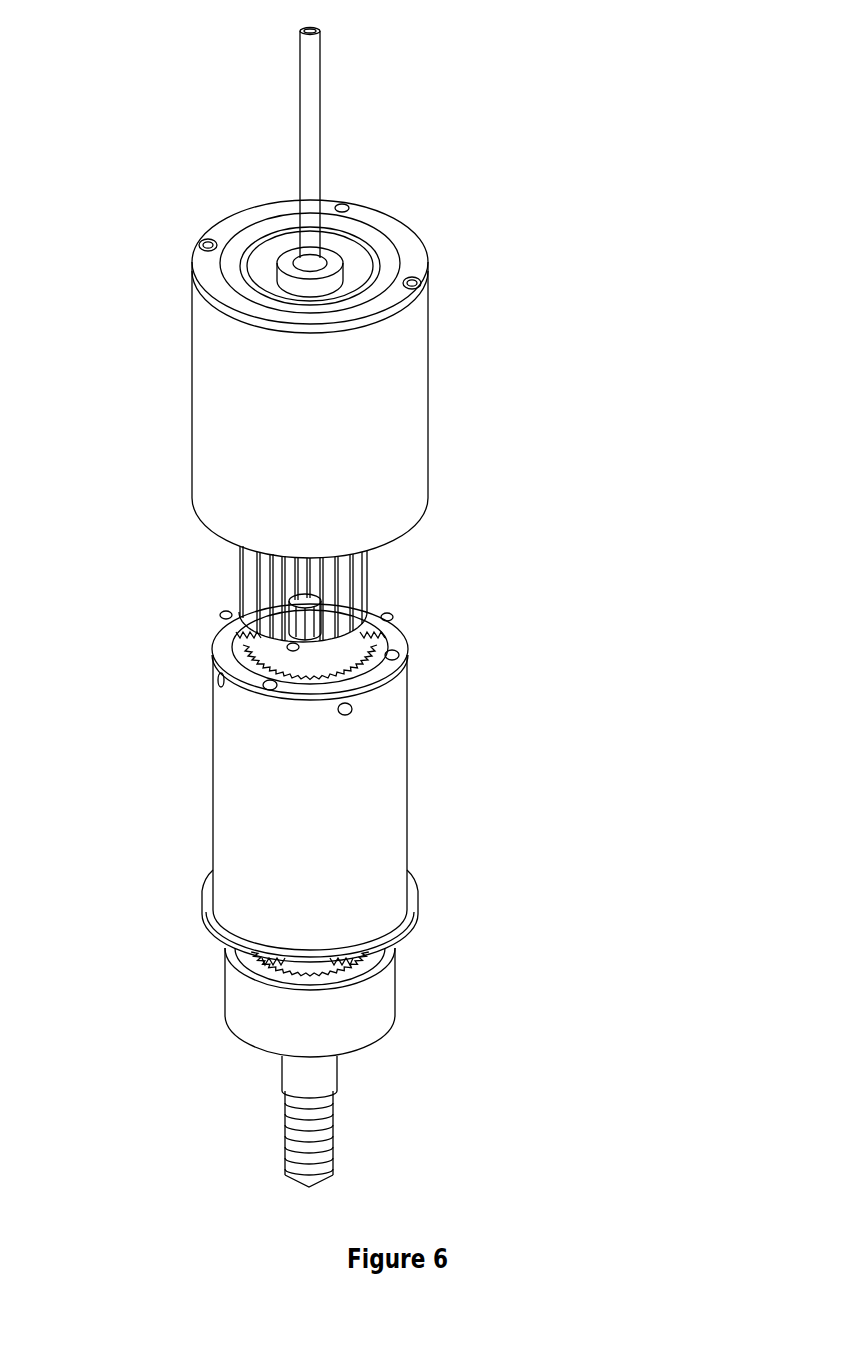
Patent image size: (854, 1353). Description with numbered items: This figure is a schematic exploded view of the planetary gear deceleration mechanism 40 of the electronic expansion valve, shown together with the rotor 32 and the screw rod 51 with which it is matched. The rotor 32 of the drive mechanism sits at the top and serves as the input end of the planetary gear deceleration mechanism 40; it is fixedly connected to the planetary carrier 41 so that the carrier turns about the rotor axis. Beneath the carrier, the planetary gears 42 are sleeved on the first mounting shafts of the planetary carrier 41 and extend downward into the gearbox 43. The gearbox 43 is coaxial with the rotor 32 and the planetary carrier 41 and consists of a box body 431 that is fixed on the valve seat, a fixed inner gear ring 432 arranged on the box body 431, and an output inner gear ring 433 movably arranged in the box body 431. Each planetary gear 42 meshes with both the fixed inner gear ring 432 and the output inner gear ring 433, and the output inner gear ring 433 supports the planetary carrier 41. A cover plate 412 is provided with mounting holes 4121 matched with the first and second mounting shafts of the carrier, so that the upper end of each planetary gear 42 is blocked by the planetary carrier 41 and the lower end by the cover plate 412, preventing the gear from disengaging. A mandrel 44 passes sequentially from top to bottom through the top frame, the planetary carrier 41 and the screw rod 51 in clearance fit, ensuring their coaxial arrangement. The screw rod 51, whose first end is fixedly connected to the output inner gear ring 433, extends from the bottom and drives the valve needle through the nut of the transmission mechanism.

The rotor 32 is at (240, 418).
The planetary gear deceleration mechanism 40 is at (647, 226).
The planetary carrier 41 is at (390, 262).
The planetary gear 42 is at (365, 588).
The gearbox 43 is at (588, 693).
The mandrel 44 is at (308, 147).
The screw rod 51 is at (333, 1085).
The cover plate 412 is at (282, 638).
The box body 431 is at (385, 742).
The fixed inner gear ring 432 is at (400, 675).
The output inner gear ring 433 is at (343, 1020).
The mounting holes 4121 is at (285, 660).